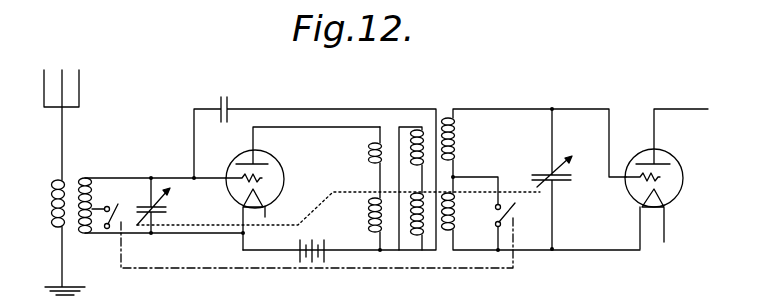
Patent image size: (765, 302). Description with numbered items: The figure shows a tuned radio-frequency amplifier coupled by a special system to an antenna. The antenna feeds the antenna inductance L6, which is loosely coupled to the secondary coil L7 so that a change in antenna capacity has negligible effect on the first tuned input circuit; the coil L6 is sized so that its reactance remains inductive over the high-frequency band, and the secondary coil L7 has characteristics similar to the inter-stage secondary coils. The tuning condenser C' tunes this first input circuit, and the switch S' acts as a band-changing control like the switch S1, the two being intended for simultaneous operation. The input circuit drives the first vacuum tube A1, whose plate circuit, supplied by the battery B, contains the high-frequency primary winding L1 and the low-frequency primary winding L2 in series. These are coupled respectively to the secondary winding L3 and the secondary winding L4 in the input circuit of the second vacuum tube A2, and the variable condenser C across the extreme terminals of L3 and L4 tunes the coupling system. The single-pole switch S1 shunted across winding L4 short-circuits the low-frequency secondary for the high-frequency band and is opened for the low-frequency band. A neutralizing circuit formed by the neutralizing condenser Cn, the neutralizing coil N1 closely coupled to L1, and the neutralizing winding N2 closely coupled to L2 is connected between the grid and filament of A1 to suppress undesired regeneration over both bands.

The antenna inductance L6 is at (56, 186).
The secondary coil L7 is at (94, 184).
The switch S' is at (302, 225).
The tuning condenser C' is at (338, 205).
The neutralizing condenser Cn is at (228, 104).
The vacuum tube A1 is at (278, 166).
The primary winding L1 is at (372, 161).
The primary winding L2 is at (370, 204).
The battery B is at (327, 237).
The neutralizing coil N1 is at (418, 158).
The neutralizing winding N2 is at (416, 240).
The secondary winding L3 is at (462, 126).
The secondary winding L4 is at (462, 202).
The single-pole switch S1 is at (511, 214).
The variable condenser C is at (552, 179).
The vacuum tube A2 is at (678, 160).